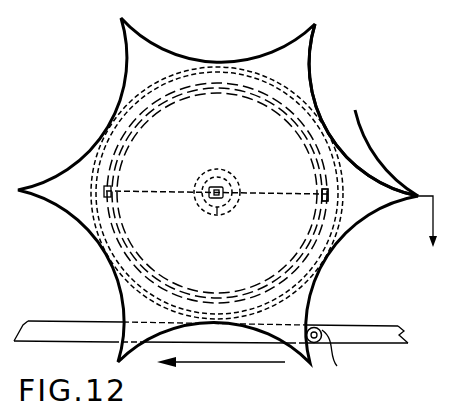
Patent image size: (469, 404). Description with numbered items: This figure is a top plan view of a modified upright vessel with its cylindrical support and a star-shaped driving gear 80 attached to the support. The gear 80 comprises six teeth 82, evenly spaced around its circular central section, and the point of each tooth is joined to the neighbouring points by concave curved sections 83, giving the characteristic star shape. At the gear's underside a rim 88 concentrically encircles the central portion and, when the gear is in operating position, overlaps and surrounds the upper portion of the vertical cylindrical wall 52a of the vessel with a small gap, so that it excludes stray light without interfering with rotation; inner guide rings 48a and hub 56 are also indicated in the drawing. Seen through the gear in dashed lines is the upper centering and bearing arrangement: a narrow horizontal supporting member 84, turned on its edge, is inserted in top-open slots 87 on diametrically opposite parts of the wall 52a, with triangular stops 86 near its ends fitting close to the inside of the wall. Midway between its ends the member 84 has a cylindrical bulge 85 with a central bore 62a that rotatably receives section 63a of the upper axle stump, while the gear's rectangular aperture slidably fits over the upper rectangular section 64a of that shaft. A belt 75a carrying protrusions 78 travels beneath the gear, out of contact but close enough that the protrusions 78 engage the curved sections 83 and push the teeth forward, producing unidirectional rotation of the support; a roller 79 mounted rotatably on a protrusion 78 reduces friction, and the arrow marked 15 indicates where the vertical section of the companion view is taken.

The section lines 15 is at (430, 234).
The inner guide rings 48a is at (165, 107).
The vertical cylindrical wall 52a is at (255, 84).
The hub 56 is at (228, 180).
The bore 62a is at (225, 204).
The section of upper axle stump 63a is at (215, 180).
The rectangular section of upper axle stump 64a is at (225, 192).
The belt 75a is at (82, 328).
The protrusions 78 is at (316, 344).
The roller 79 is at (352, 372).
The star-shaped gear 80 is at (114, 106).
The teeth 82 is at (297, 75).
The concave curved sections 83 is at (328, 130).
The horizontal supporting member 84 is at (160, 190).
The cylindrical bulge 85 is at (208, 208).
The triangular stops 86 is at (111, 195).
The slots 87 is at (329, 194).
The rim 88 is at (163, 78).